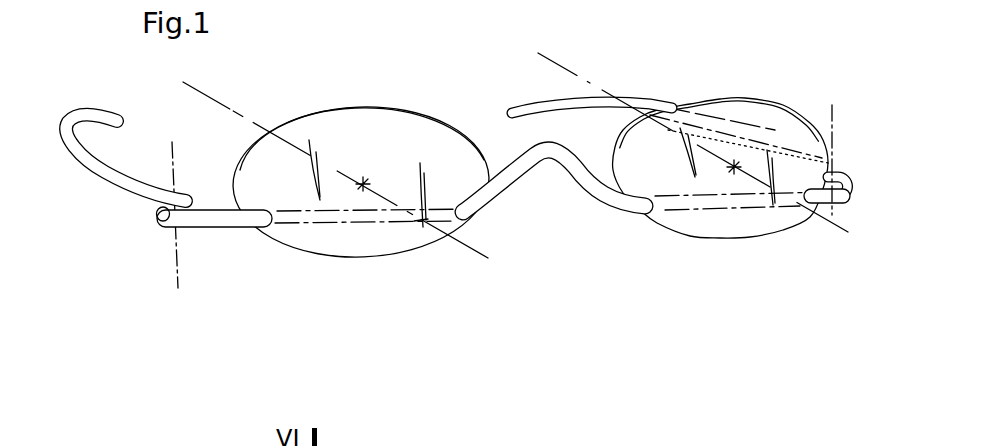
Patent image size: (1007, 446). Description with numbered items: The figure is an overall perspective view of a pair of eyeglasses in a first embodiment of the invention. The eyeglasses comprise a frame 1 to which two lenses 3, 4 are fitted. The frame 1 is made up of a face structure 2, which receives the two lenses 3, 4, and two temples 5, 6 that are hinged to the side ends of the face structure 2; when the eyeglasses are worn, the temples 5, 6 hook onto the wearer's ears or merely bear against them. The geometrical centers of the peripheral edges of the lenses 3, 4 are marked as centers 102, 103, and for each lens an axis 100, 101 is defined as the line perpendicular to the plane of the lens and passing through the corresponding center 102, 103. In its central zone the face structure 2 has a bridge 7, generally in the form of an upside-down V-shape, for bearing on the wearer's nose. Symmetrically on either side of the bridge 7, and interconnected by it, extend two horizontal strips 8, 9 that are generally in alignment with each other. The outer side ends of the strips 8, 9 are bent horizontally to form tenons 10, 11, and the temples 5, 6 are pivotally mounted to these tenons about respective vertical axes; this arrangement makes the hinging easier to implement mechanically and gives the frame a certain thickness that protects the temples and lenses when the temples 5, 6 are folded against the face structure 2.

The frame 1 is at (150, 240).
The face structure 2 is at (213, 236).
The lens 3 is at (371, 106).
The lens 4 is at (784, 103).
The temple 5 is at (103, 170).
The temple 6 is at (647, 99).
The bridge 7 is at (521, 184).
The horizontal strip 8 is at (245, 228).
The horizontal strip 9 is at (822, 213).
The tenon 10 is at (155, 220).
The tenon 11 is at (853, 182).
The axis 100 is at (204, 89).
The axis 101 is at (557, 62).
The geometrical center 102 is at (367, 182).
The geometrical center 103 is at (731, 172).